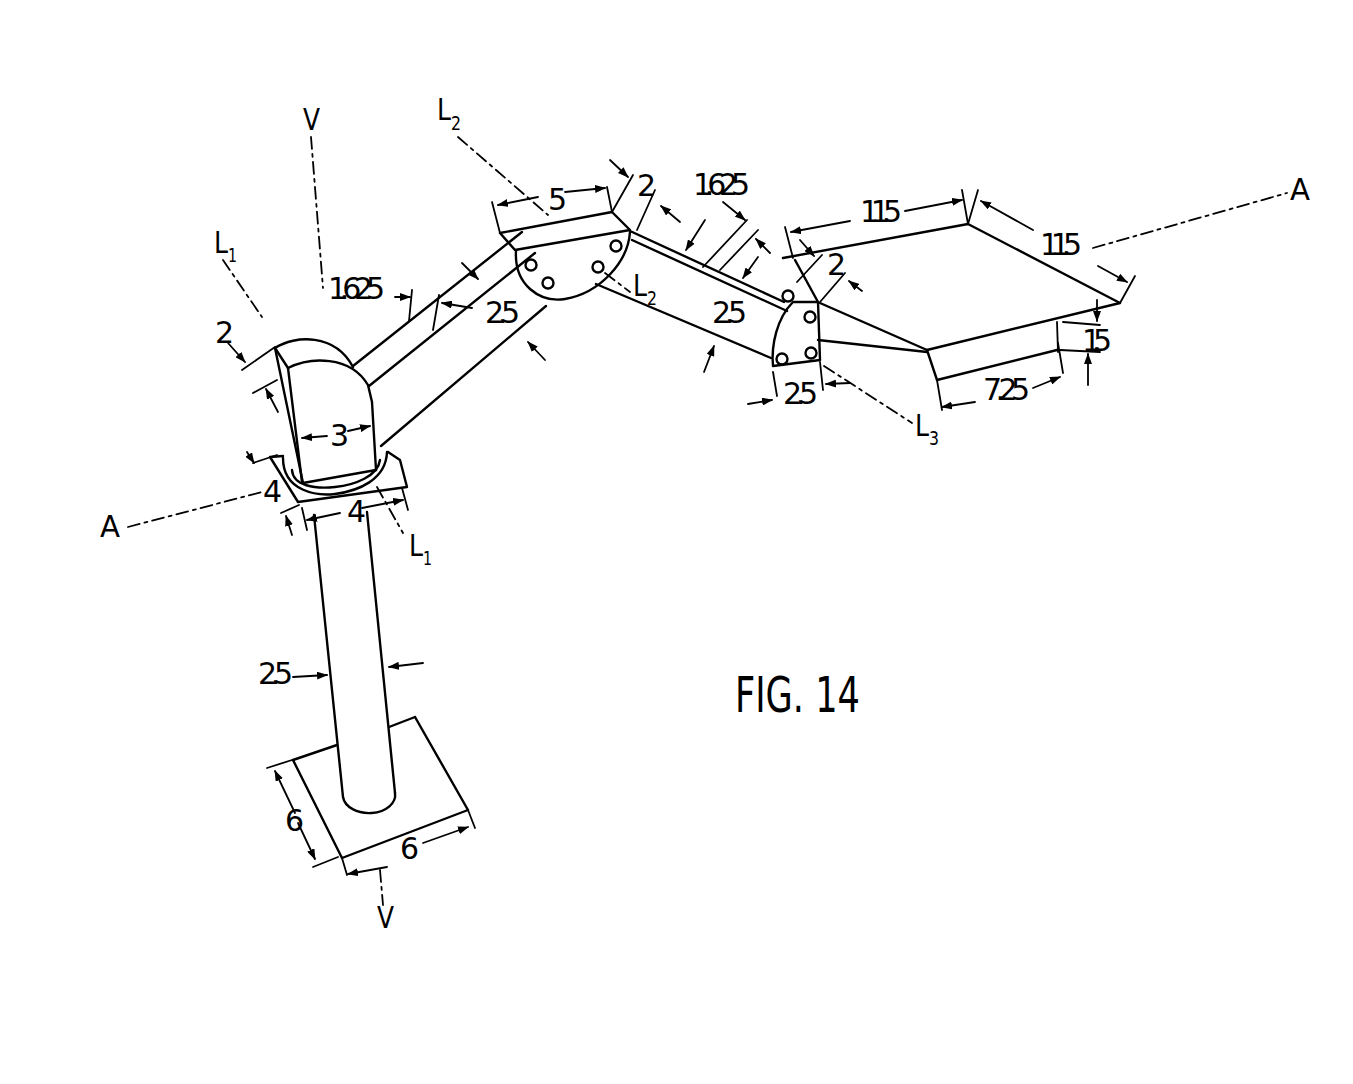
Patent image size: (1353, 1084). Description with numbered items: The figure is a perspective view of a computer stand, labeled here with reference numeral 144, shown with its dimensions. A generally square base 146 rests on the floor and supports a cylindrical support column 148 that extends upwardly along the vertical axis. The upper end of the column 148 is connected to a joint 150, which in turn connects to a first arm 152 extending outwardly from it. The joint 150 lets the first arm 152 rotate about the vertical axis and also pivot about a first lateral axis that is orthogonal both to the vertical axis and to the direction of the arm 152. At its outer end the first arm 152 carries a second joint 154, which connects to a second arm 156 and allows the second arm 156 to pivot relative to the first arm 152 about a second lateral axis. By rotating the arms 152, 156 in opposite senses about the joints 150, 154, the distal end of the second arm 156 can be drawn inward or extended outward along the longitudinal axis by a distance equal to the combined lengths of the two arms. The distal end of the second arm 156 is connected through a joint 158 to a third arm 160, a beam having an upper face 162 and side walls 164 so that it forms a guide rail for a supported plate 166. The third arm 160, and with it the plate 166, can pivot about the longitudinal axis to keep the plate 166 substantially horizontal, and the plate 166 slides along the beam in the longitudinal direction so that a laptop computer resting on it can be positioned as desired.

The stand assembly 144 is at (993, 136).
The base 146 is at (443, 764).
The support column 148 is at (380, 613).
The joint 150 is at (304, 346).
The first arm 152 is at (452, 287).
The second joint 154 is at (570, 298).
The second arm 156 is at (678, 318).
The joint 158 is at (752, 353).
The third arm 160 is at (888, 348).
The upper face 162 is at (852, 318).
The side walls 164 is at (850, 344).
The plate 166 is at (969, 295).